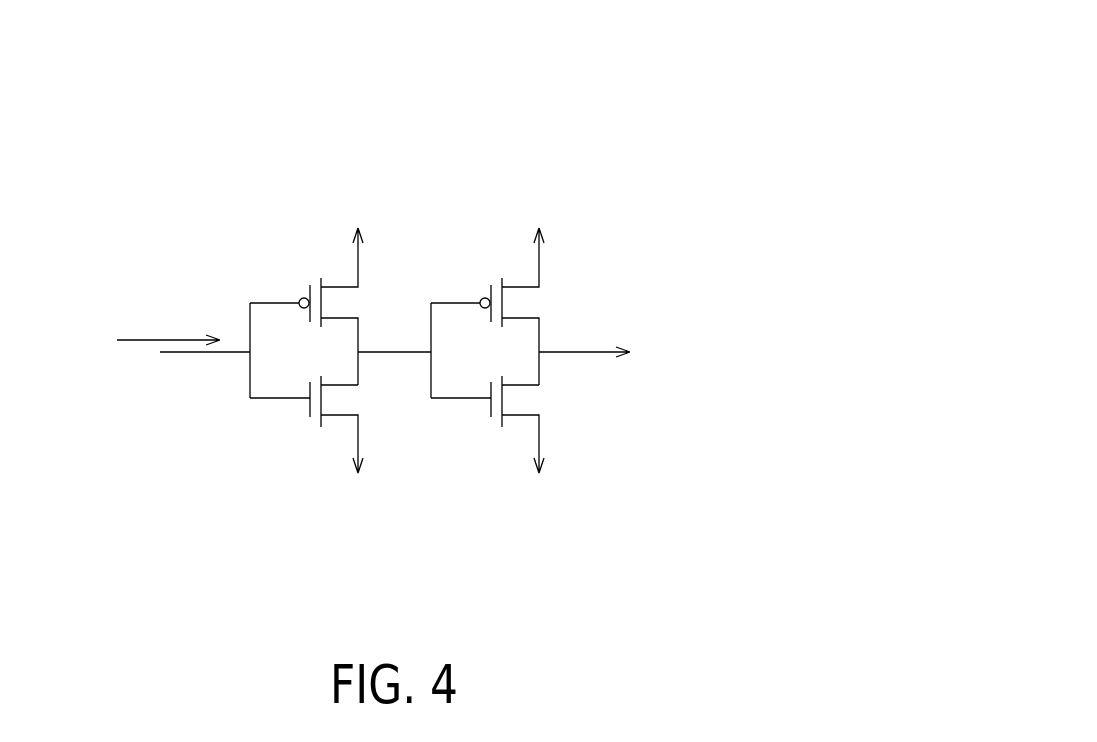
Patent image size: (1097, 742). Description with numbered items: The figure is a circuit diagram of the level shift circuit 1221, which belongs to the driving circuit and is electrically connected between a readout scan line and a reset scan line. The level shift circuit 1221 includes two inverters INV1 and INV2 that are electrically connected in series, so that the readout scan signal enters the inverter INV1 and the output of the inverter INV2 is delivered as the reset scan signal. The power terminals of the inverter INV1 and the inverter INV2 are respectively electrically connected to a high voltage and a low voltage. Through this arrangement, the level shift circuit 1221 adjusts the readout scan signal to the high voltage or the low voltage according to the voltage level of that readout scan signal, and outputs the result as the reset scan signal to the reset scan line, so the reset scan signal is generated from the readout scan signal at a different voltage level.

The level shift circuit 1221 is at (672, 90).
The inverter INV1 is at (293, 274).
The inverter INV2 is at (492, 354).